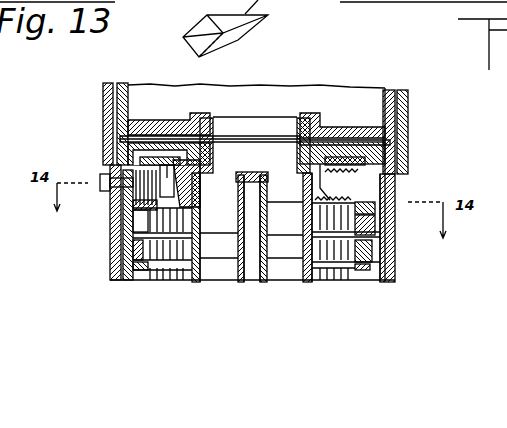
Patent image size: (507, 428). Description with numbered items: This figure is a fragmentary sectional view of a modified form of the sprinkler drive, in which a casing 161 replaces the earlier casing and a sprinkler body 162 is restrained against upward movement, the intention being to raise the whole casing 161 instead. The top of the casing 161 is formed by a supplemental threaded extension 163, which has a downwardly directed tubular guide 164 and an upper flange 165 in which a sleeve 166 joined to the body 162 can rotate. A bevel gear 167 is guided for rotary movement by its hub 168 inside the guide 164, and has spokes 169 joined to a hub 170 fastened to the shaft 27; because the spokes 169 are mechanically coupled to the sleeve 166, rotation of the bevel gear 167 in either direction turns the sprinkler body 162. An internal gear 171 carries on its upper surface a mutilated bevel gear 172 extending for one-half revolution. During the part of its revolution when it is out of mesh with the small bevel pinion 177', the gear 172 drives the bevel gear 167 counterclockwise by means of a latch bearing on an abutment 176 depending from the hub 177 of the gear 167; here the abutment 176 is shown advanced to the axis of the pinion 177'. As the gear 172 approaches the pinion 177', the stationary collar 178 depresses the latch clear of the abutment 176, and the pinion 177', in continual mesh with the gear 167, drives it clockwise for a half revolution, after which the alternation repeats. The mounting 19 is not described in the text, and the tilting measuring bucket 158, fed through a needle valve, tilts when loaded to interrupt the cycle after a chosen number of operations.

The housing 19 is at (410, 110).
The shaft 27 is at (249, 283).
The tilting measuring bucket 158 is at (258, 31).
The casing 161 is at (110, 252).
The sprinkler body 162 is at (128, 81).
The supplemental threaded extension 163 is at (335, 203).
The tubular guide 164 is at (380, 200).
The upper flange 165 is at (320, 113).
The sleeve 166 is at (216, 172).
The bevel gear 167 is at (168, 145).
The hub 168 is at (318, 114).
The spokes 169 is at (223, 172).
The hub 170 is at (268, 175).
The internal gear 171 is at (142, 222).
The mutilated bevel gear 172 is at (385, 222).
The abutment 176 is at (195, 213).
The hub 177 is at (399, 164).
The bevel pinion 177' is at (85, 168).
The stationary collar 178 is at (128, 163).